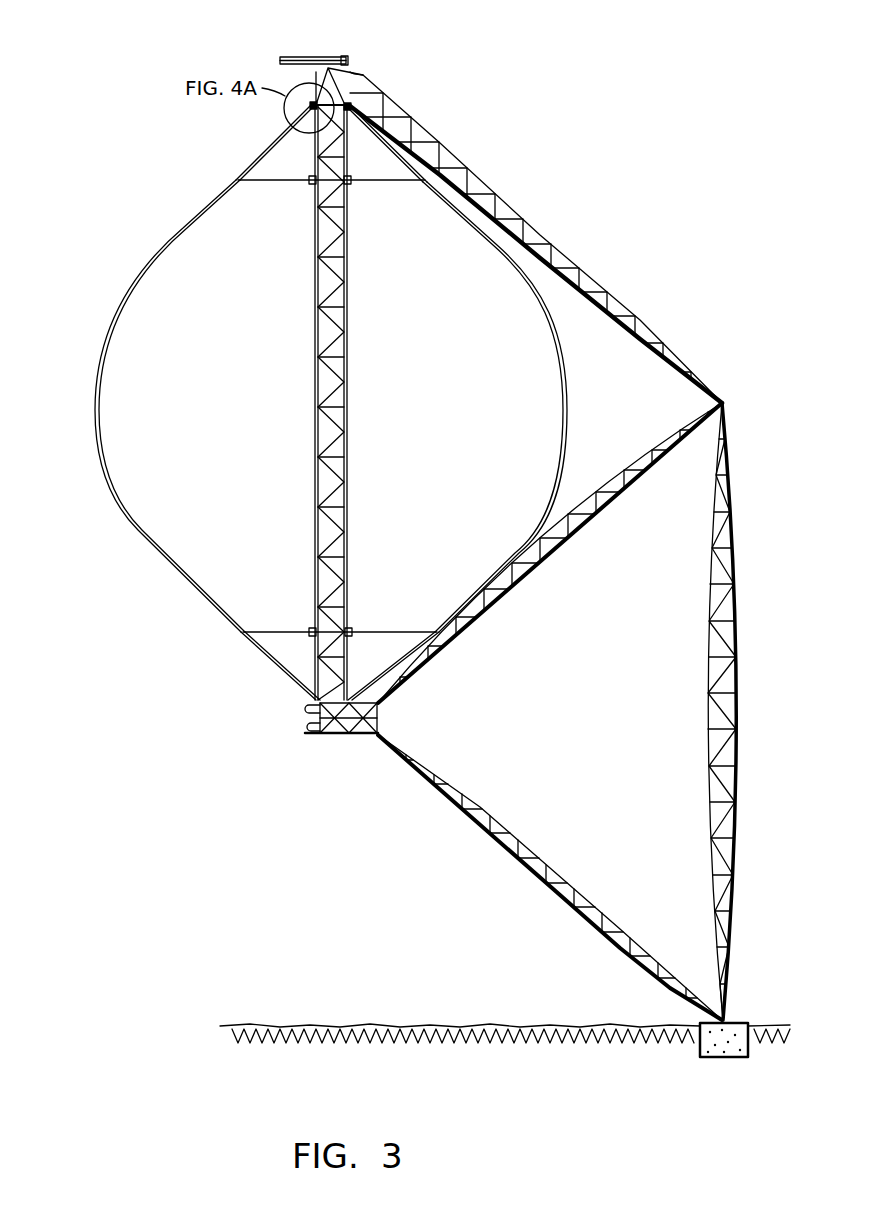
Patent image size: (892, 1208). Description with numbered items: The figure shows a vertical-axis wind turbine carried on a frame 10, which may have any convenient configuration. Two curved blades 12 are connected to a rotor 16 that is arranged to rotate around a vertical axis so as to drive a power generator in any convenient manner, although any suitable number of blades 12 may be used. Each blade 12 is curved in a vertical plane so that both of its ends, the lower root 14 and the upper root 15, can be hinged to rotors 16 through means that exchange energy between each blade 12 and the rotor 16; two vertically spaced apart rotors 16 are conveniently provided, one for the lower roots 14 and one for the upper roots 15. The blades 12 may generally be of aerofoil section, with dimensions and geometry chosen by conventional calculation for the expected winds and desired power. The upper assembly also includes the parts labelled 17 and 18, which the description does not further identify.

The frame 10 is at (566, 257).
The blade 12 is at (95, 417).
The lower root 14 is at (292, 688).
The upper root 15 is at (290, 134).
The rotor 16 is at (322, 715).
The upper bearing cap 17 is at (343, 66).
The hub 18 is at (313, 103).